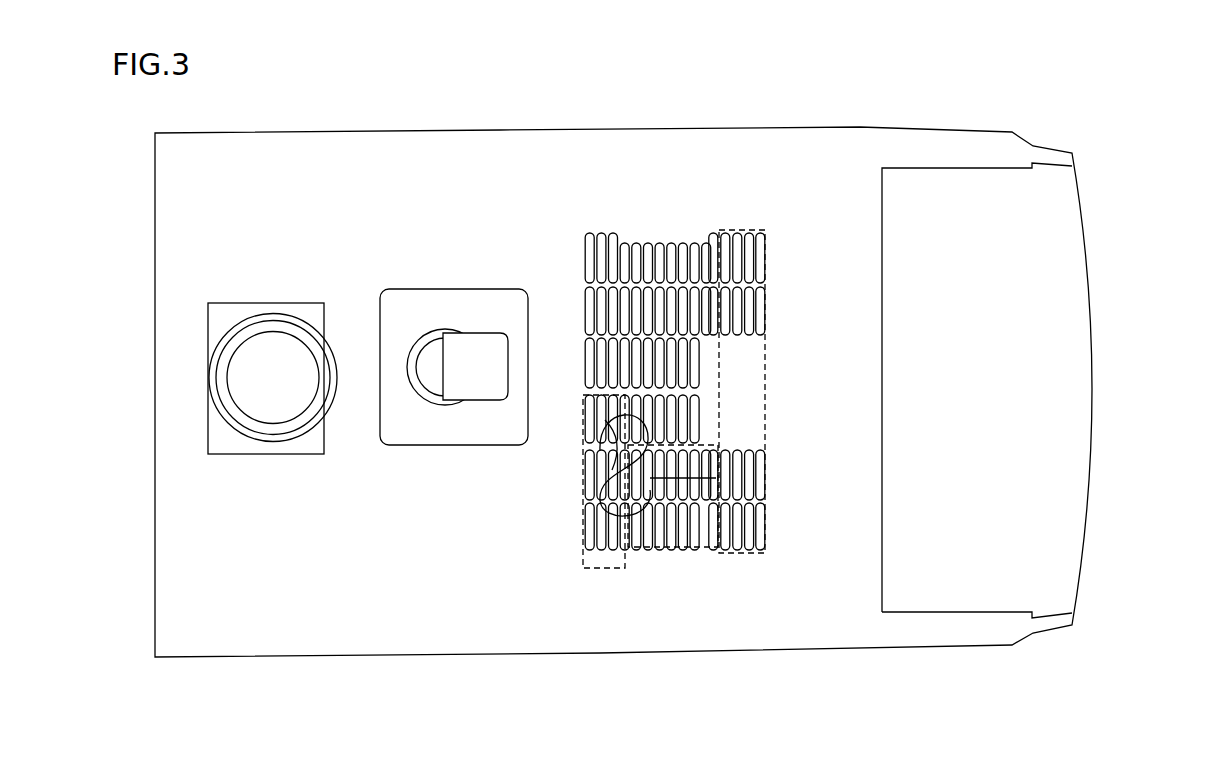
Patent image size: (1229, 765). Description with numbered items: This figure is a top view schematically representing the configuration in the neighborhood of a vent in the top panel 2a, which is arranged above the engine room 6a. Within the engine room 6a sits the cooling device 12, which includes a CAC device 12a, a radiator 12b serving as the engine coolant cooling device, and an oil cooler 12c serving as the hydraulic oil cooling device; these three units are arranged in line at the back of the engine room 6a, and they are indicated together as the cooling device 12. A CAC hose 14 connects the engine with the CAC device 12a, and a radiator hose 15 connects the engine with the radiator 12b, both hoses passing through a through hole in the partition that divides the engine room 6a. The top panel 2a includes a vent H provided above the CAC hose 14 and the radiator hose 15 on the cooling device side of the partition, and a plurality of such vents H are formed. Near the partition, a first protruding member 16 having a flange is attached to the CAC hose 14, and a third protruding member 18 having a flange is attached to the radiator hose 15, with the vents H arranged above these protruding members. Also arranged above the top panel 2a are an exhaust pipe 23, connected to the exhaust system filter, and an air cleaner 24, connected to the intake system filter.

The top panel 2a is at (624, 614).
The engine room 6a is at (492, 272).
The cooling device 12 is at (961, 391).
The CAC device 12a is at (765, 530).
The radiator 12b is at (765, 316).
The oil cooler 12c is at (765, 258).
The CAC hose 14 is at (685, 545).
The radiator hose 15 is at (703, 465).
The first protruding member 16 is at (652, 490).
The third protruding member 18 is at (636, 422).
The exhaust pipe 23 is at (462, 365).
The air cleaner 24 is at (272, 390).
The vent H is at (604, 548).